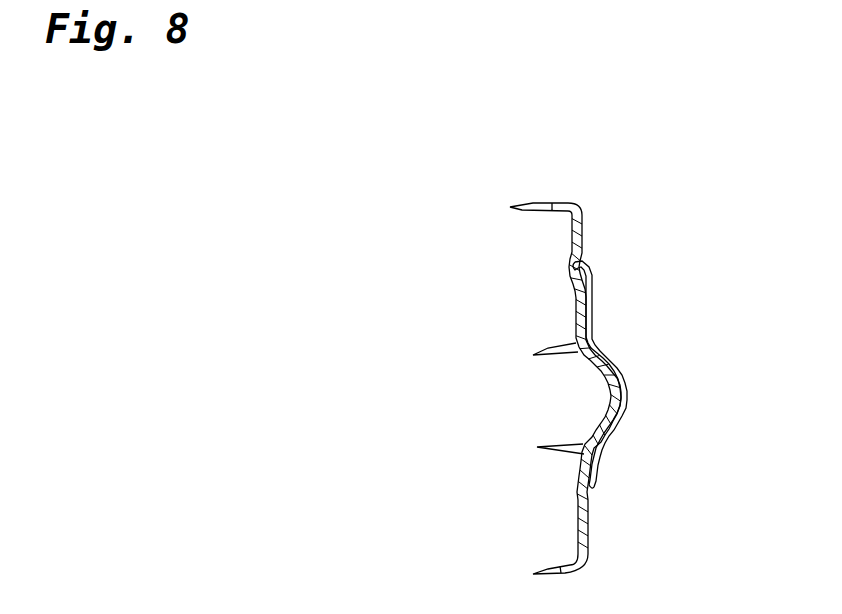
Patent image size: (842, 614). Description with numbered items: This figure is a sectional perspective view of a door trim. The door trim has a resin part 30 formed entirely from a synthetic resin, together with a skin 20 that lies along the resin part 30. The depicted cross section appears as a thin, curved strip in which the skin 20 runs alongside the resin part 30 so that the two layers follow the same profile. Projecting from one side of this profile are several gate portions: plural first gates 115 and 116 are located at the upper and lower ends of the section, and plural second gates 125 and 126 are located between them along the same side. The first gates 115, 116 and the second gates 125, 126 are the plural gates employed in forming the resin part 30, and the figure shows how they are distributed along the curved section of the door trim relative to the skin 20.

The skin 20 is at (630, 388).
The resin part 30 is at (577, 295).
The first gate 115 is at (533, 203).
The first gate 116 is at (547, 572).
The second gate 125 is at (553, 347).
The second gate 126 is at (553, 452).